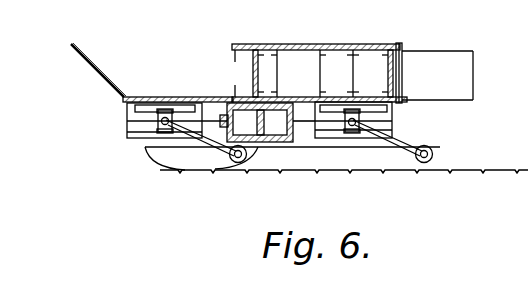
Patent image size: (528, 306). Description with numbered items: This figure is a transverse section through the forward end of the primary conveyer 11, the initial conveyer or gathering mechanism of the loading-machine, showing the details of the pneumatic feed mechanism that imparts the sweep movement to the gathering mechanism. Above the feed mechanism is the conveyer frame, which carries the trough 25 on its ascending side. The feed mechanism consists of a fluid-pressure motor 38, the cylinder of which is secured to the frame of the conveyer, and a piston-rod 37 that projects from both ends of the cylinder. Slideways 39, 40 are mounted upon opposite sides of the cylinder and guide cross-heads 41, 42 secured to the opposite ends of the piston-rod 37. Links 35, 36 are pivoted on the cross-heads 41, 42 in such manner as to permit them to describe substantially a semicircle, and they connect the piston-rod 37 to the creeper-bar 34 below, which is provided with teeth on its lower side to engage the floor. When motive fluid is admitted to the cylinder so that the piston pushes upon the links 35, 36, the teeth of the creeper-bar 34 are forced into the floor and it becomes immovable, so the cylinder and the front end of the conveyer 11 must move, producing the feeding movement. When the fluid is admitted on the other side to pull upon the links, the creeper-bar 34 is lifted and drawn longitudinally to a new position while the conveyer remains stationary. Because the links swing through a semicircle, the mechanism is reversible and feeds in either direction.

The primary conveyer 11 is at (303, 62).
The trough 25 is at (124, 96).
The creeper-bar 34 is at (370, 163).
The link 35 is at (205, 145).
The link 36 is at (400, 143).
The piston-rod 37 is at (310, 144).
The fluid-pressure motor 38 is at (272, 144).
The slideway 39 is at (130, 138).
The slideway 40 is at (392, 103).
The cross-head 41 is at (127, 122).
The cross-head 42 is at (395, 117).